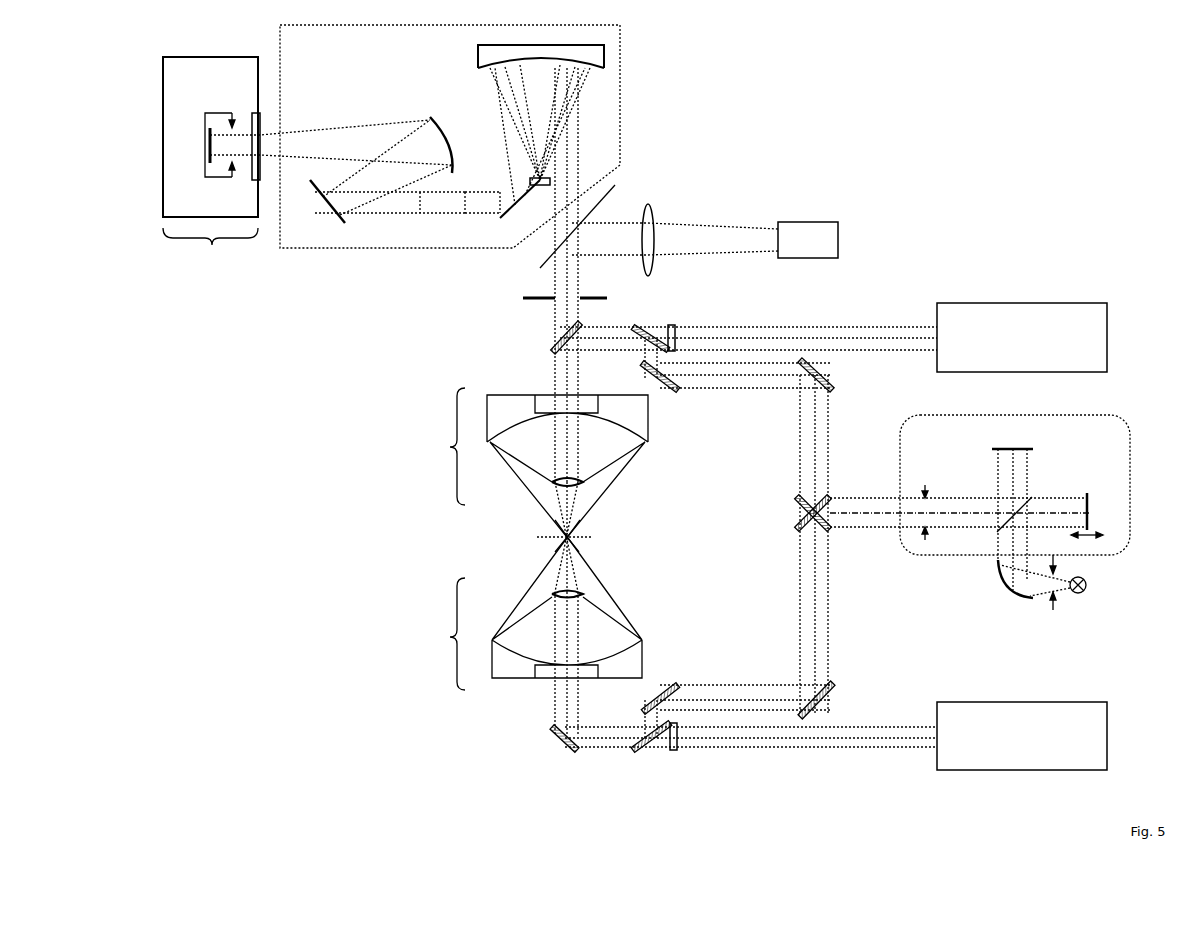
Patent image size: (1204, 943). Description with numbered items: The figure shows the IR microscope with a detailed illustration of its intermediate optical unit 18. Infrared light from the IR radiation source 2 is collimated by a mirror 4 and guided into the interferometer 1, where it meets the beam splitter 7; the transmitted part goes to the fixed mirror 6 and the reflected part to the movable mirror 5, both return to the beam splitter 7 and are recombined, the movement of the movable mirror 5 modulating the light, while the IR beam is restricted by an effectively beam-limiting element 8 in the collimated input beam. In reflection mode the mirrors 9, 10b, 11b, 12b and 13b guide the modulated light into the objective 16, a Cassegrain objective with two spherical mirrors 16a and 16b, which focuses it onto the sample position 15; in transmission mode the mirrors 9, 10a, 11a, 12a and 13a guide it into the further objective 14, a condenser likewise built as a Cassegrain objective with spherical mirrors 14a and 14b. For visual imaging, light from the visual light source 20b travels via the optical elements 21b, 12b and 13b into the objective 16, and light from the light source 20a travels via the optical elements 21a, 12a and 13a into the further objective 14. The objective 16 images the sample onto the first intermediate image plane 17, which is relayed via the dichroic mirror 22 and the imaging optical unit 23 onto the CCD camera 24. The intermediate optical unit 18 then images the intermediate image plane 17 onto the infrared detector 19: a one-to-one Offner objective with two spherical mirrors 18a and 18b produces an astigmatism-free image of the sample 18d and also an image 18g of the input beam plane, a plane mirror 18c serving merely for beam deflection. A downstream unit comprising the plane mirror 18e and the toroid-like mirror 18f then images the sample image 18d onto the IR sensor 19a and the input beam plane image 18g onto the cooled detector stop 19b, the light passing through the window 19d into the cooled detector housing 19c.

The interferometer 1 is at (1025, 485).
The IR radiation source 2 is at (1083, 582).
The mirror 4 is at (1015, 583).
The movable mirror 5 is at (1091, 515).
The fixed mirror 6 is at (1012, 435).
The beam splitter 7 is at (1024, 504).
The effectively beam-limiting element 8 is at (924, 497).
The mirror 9 is at (794, 513).
The mirror 10a is at (836, 700).
The mirror 10b is at (836, 375).
The mirror 11a is at (671, 685).
The mirror 11b is at (671, 392).
The optical element 12a is at (651, 749).
The optical element 12b is at (650, 329).
The optical element 13a is at (552, 751).
The optical element 13b is at (549, 337).
The further objective 14 is at (441, 634).
The spherical mirror 14a is at (606, 591).
The spherical mirror 14b is at (585, 599).
The sample position 15 is at (546, 536).
The microscope objective 16 is at (441, 446).
The spherical mirror 16a is at (606, 487).
The spherical mirror 16b is at (587, 473).
The first intermediate image plane 17 is at (549, 298).
The intermediate optical unit 18 is at (460, 126).
The spherical mirror 18a is at (527, 56).
The spherical mirror 18b is at (555, 183).
The plane mirror 18c is at (519, 210).
The image of the sample 18d is at (390, 216).
The plane mirror 18e is at (322, 203).
The mirror 18f is at (444, 135).
The image of the input beam plane 18g is at (477, 216).
The infrared detector 19 is at (210, 164).
The IR sensor 19a is at (203, 145).
The detector stop 19b is at (230, 131).
The detector housing 19c is at (218, 106).
The window 19d is at (263, 152).
The light source 20a is at (1022, 727).
The visual light source 20b is at (1022, 349).
The optical element 21a is at (686, 749).
The optical element 21b is at (685, 327).
The dichroic mirror 22 is at (577, 226).
The imaging optical unit 23 is at (667, 233).
The CCD camera 24 is at (822, 225).